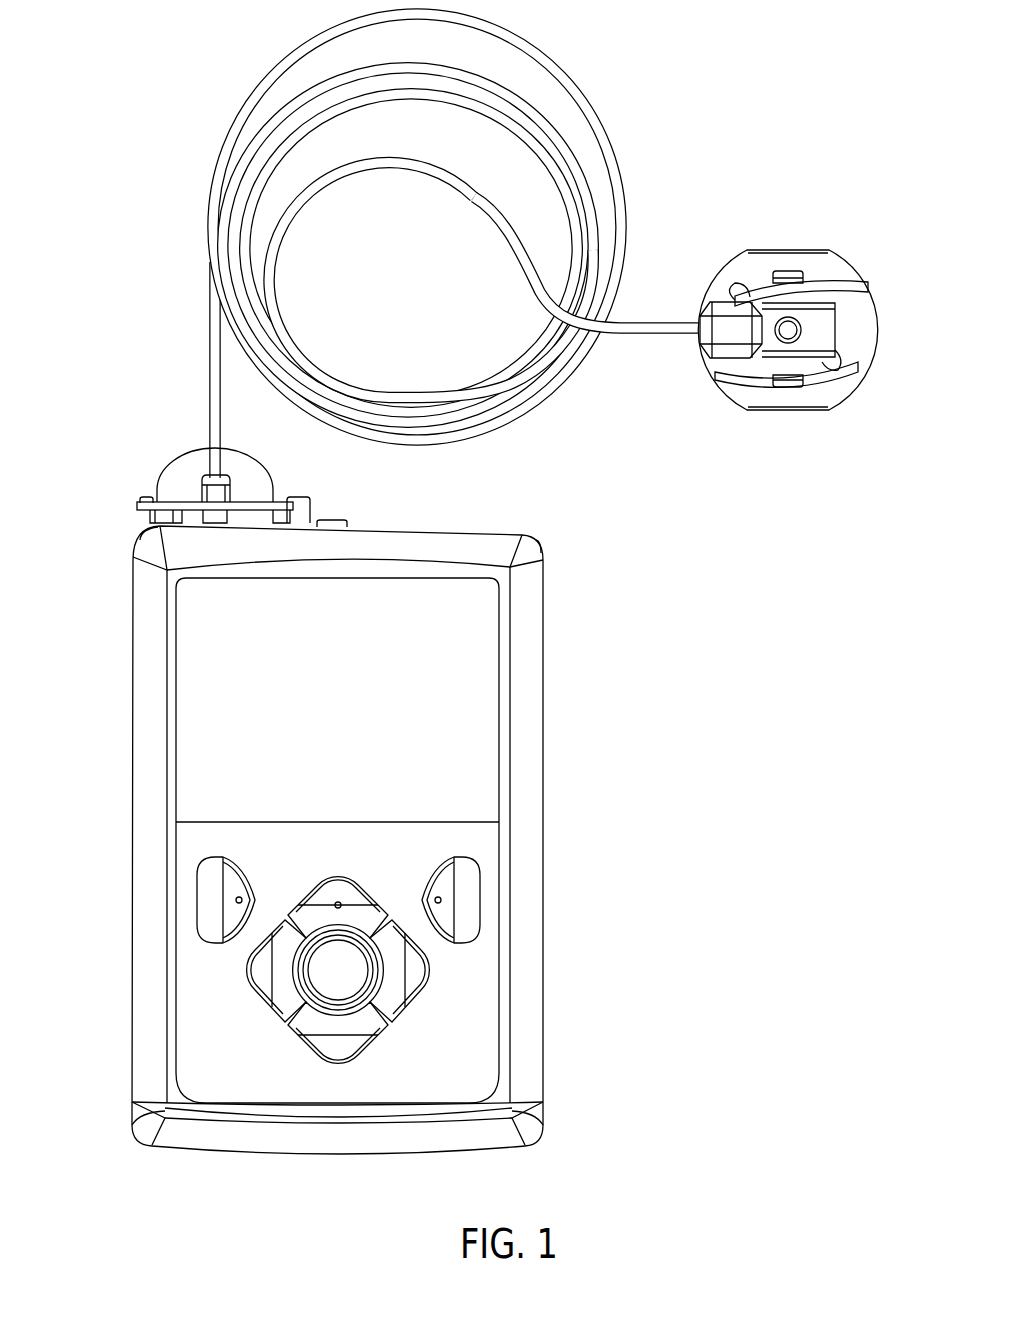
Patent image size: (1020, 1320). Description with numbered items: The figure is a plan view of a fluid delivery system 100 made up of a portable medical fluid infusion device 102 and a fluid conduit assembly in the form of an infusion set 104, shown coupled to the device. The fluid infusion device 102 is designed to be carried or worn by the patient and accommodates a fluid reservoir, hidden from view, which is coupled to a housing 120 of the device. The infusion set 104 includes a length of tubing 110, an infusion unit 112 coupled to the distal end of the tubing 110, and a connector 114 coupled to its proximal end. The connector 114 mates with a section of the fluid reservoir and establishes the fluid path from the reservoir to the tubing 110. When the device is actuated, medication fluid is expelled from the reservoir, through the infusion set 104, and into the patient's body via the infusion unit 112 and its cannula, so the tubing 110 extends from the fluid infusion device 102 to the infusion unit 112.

The fluid delivery system 100 is at (168, 77).
The fluid infusion device 102 is at (582, 732).
The infusion set 104 is at (715, 118).
The tubing 110 is at (205, 247).
The infusion unit 112 is at (793, 410).
The connector 114 is at (178, 455).
The housing 120 is at (133, 690).